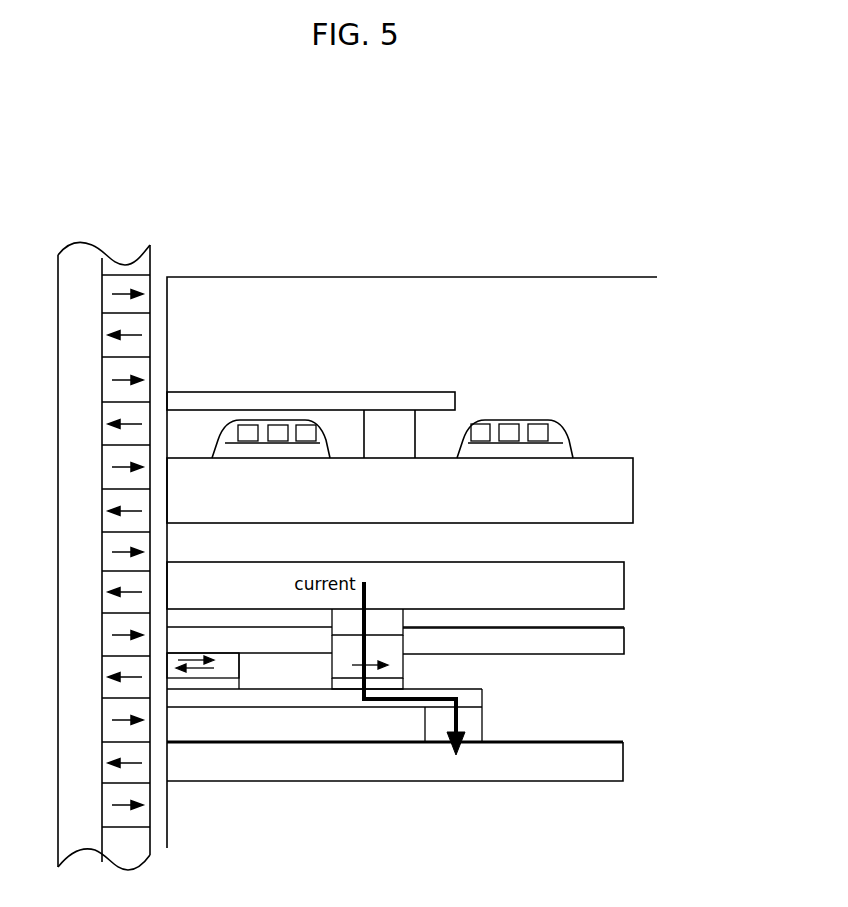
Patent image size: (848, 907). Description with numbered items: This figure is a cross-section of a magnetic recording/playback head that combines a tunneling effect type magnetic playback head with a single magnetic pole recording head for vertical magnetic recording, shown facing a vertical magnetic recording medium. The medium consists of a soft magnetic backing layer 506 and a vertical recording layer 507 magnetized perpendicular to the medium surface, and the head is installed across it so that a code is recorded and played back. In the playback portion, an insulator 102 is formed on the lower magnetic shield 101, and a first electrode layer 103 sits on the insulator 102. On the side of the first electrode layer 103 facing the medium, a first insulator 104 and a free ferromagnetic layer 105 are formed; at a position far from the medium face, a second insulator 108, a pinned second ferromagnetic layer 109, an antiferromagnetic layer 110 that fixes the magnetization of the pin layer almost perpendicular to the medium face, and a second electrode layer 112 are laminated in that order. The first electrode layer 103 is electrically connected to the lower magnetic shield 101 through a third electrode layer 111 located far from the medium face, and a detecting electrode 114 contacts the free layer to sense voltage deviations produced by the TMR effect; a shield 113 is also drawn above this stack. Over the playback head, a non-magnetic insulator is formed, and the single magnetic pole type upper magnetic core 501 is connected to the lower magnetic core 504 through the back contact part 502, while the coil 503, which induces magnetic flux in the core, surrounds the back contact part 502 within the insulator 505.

The soft magnetic backing layer 506 is at (83, 272).
The vertical recording layer 507 is at (120, 265).
The insulator 505 is at (196, 428).
The single magnetic pole type upper magnetic core 501 is at (208, 400).
The back contact part 502 is at (383, 415).
The coil 503 is at (508, 430).
The lower magnetic core 504 is at (608, 489).
The top shield 113 is at (575, 582).
The second electrode layer 112 is at (385, 622).
The antiferromagnetic layer 110 is at (405, 646).
The detecting electrode 114 is at (607, 643).
The second ferromagnetic layer (pin layer) 109 is at (400, 663).
The second insulator 108 is at (400, 685).
The first electrode layer 103 is at (185, 702).
The ferromagnetic layer (free layer) 105 is at (225, 665).
The first insulator 104 is at (200, 688).
The third electrode layer 111 is at (442, 727).
The insulator 102 is at (345, 732).
The lower magnetic shield 101 is at (577, 768).